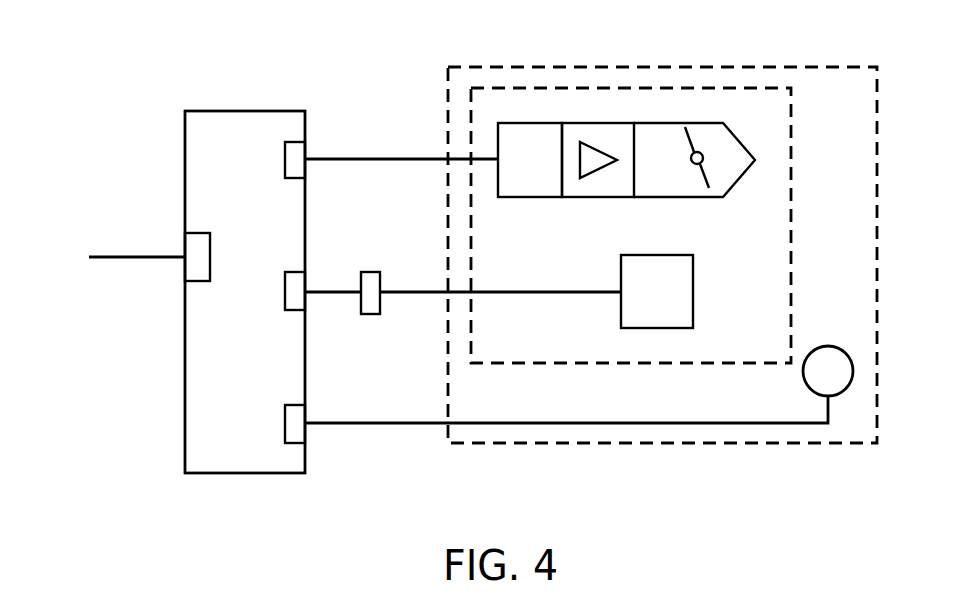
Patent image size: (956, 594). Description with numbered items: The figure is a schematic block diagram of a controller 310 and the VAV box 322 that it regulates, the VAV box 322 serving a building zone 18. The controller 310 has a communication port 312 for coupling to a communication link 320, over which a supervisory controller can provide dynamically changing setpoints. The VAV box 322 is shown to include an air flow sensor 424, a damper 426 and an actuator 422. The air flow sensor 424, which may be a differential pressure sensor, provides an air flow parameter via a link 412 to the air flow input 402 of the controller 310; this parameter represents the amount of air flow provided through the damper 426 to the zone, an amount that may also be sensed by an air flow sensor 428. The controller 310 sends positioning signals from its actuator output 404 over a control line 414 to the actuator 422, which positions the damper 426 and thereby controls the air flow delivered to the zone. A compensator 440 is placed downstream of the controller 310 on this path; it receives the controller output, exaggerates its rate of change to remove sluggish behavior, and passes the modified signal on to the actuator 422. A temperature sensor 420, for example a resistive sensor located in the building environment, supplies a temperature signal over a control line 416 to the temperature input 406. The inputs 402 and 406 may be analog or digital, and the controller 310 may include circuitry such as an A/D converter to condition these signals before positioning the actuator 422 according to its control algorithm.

The zone 18 is at (862, 199).
The controller 310 is at (268, 118).
The communication port 312 is at (197, 245).
The communication link 320 is at (119, 258).
The VAV box 322 is at (778, 132).
The air flow input 402 is at (300, 150).
The actuator output 404 is at (302, 288).
The temperature input 406 is at (298, 431).
The link 412 is at (390, 157).
The control line 414 is at (427, 290).
The control line 416 is at (417, 425).
The temperature sensor 420 is at (840, 360).
The actuator 422 is at (683, 294).
The air flow sensor 424 is at (601, 135).
The damper 426 is at (675, 136).
The air flow sensor 428 is at (743, 140).
The compensator 440 is at (366, 283).